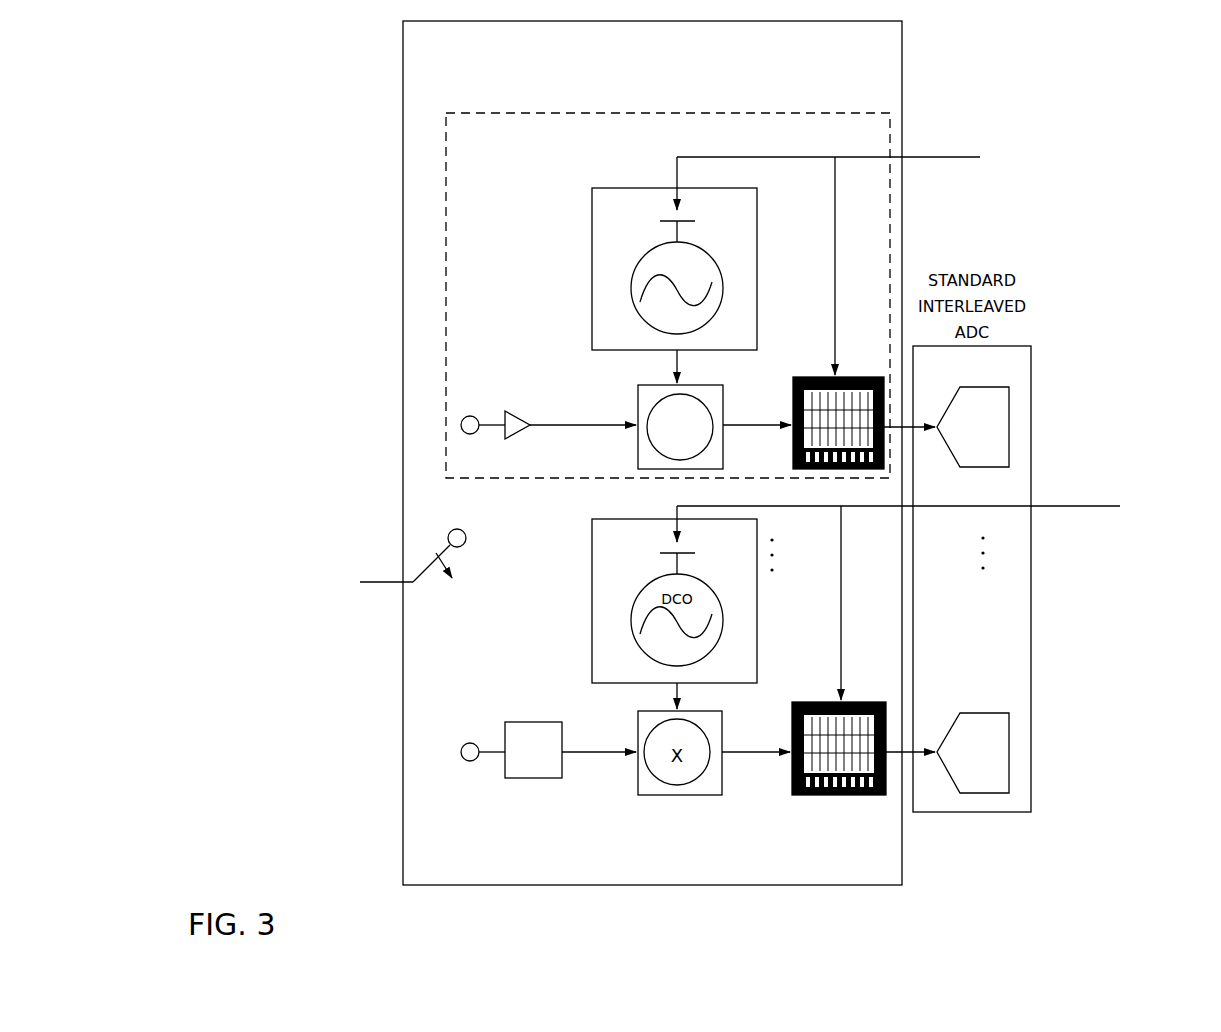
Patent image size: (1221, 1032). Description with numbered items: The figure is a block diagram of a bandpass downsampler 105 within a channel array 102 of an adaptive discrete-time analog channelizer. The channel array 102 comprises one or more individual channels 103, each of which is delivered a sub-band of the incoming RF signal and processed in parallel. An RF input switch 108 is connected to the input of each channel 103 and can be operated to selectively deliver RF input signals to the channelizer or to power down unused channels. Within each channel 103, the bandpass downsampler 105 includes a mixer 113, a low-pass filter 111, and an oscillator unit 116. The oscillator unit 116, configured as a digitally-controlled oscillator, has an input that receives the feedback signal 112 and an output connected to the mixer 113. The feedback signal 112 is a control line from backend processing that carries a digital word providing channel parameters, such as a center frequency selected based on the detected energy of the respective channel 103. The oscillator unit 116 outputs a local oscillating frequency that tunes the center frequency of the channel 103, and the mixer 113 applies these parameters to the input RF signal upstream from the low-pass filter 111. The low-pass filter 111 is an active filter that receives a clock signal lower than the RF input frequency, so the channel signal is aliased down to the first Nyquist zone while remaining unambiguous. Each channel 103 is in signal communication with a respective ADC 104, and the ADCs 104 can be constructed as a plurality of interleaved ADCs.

The channel array 102 is at (394, 84).
The individual channel 103 is at (547, 106).
The ADC 104 is at (968, 482).
The bandpass downsampler 105 is at (518, 214).
The RF input switch 108 is at (378, 570).
The low-pass filter 111 is at (815, 374).
The feedback signal 112 is at (917, 156).
The mixer 113 is at (630, 402).
The oscillator unit 116 is at (770, 246).